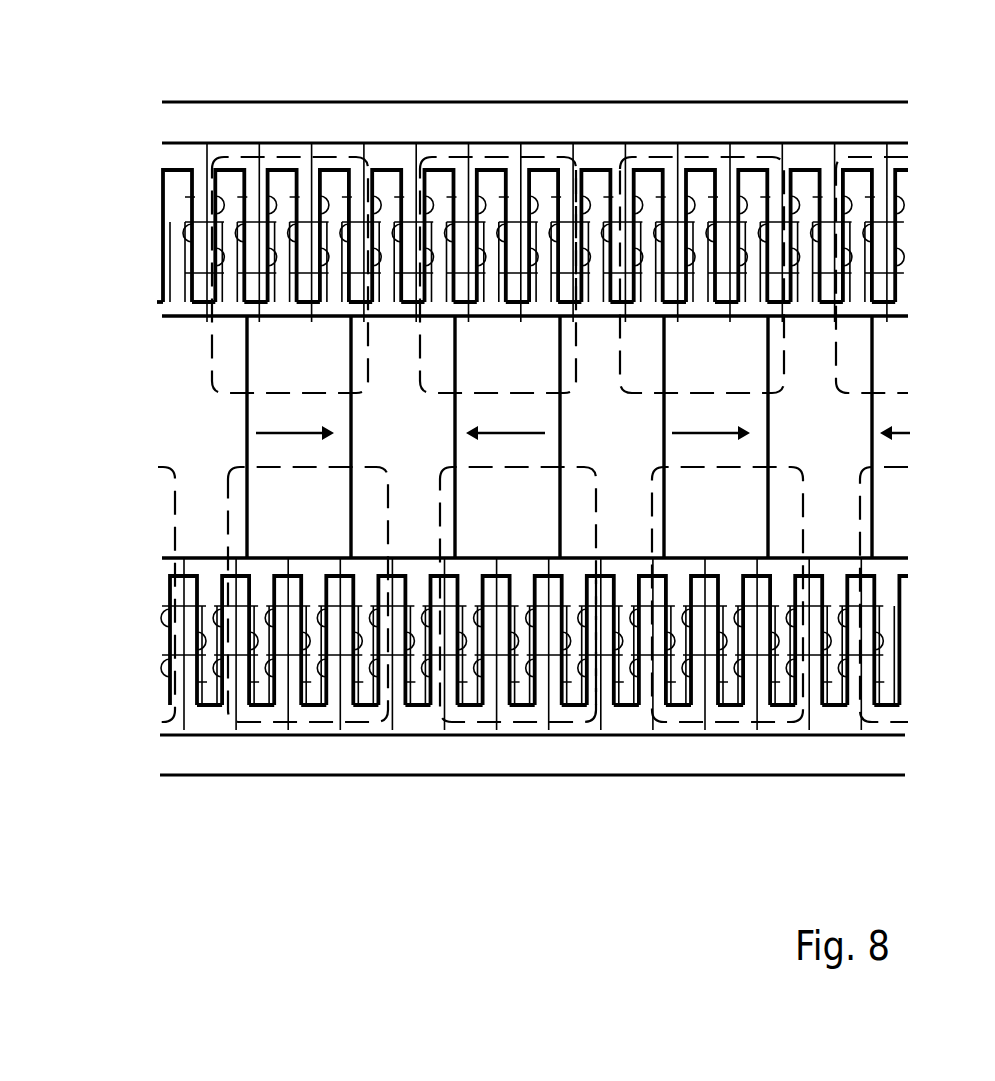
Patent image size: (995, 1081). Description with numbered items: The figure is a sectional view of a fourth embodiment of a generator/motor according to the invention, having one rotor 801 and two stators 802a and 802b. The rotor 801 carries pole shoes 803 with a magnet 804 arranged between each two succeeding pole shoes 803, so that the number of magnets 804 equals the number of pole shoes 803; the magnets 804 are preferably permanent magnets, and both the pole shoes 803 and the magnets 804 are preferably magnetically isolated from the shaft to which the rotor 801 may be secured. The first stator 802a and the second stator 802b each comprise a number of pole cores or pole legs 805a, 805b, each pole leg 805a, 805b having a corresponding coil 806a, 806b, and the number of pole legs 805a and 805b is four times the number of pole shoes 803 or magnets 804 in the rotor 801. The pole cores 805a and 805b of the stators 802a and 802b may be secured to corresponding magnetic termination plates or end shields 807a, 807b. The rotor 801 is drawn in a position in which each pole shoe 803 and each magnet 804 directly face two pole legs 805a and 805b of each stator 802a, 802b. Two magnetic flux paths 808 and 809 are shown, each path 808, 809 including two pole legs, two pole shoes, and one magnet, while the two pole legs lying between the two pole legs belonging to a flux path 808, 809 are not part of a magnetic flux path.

The rotor 801 is at (160, 430).
The first stator 802a is at (170, 157).
The second stator 802b is at (172, 742).
The pole shoe 803 is at (608, 472).
The magnet 804 is at (497, 455).
The pole core or pole leg of first stator 805a is at (563, 193).
The pole core or pole leg of second stator 805b is at (597, 660).
The coil of first stator 806a is at (577, 220).
The coil of second stator 806b is at (604, 678).
The magnetic termination plate/end shield 807a is at (230, 120).
The magnetic termination plate/end shield 807b is at (203, 753).
The magnetic flux path 808 is at (427, 368).
The magnetic flux path 809 is at (433, 527).